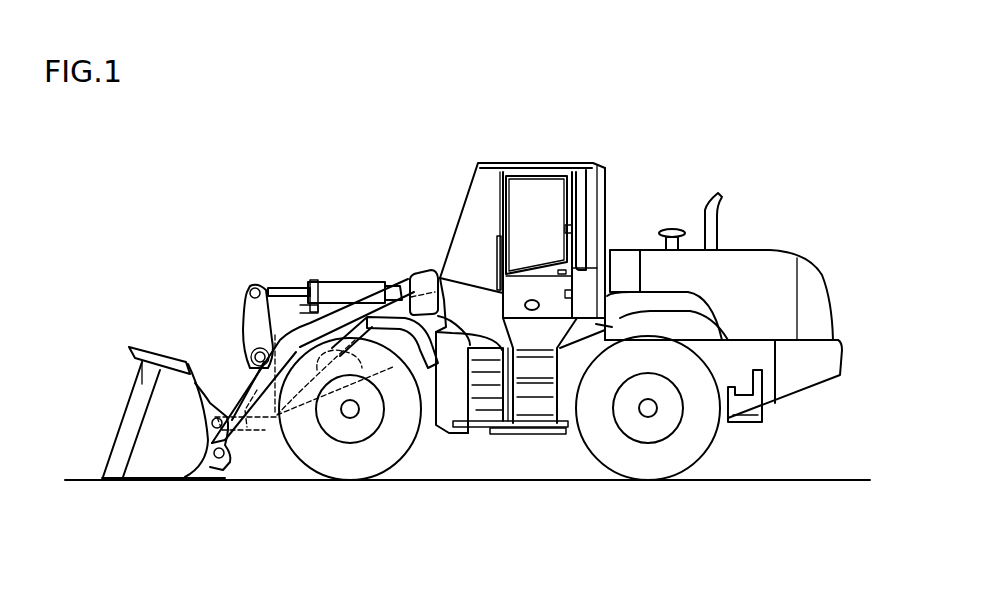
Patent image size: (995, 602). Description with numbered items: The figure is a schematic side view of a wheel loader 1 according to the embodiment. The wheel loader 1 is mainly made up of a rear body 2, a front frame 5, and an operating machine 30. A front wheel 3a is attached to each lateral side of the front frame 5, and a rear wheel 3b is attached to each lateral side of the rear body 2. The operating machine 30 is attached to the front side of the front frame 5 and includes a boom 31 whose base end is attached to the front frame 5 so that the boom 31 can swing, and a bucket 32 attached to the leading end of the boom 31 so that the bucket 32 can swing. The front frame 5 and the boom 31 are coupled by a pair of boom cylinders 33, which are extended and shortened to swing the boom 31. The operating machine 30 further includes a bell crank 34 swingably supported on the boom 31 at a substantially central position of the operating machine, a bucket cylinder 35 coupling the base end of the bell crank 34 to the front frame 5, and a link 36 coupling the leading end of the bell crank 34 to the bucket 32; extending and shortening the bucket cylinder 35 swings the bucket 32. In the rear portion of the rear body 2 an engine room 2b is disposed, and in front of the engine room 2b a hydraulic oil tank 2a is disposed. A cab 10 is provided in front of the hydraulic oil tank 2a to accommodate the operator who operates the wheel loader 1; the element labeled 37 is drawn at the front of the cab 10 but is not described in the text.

The wheel loader 1 is at (699, 132).
The rear body 2 is at (807, 372).
The hydraulic oil tank 2a is at (622, 258).
The engine room 2b is at (772, 280).
The front wheel 3a is at (355, 458).
The rear wheel 3b is at (653, 458).
The front frame 5 is at (447, 408).
The cab 10 is at (558, 155).
The operating machine 30 is at (226, 334).
The boom 31 is at (293, 345).
The bucket 32 is at (157, 437).
The boom cylinder 33 is at (402, 352).
The bell crank 34 is at (253, 327).
The bucket cylinder 35 is at (347, 292).
The link 36 is at (247, 455).
The cab front pillar 37 is at (473, 207).